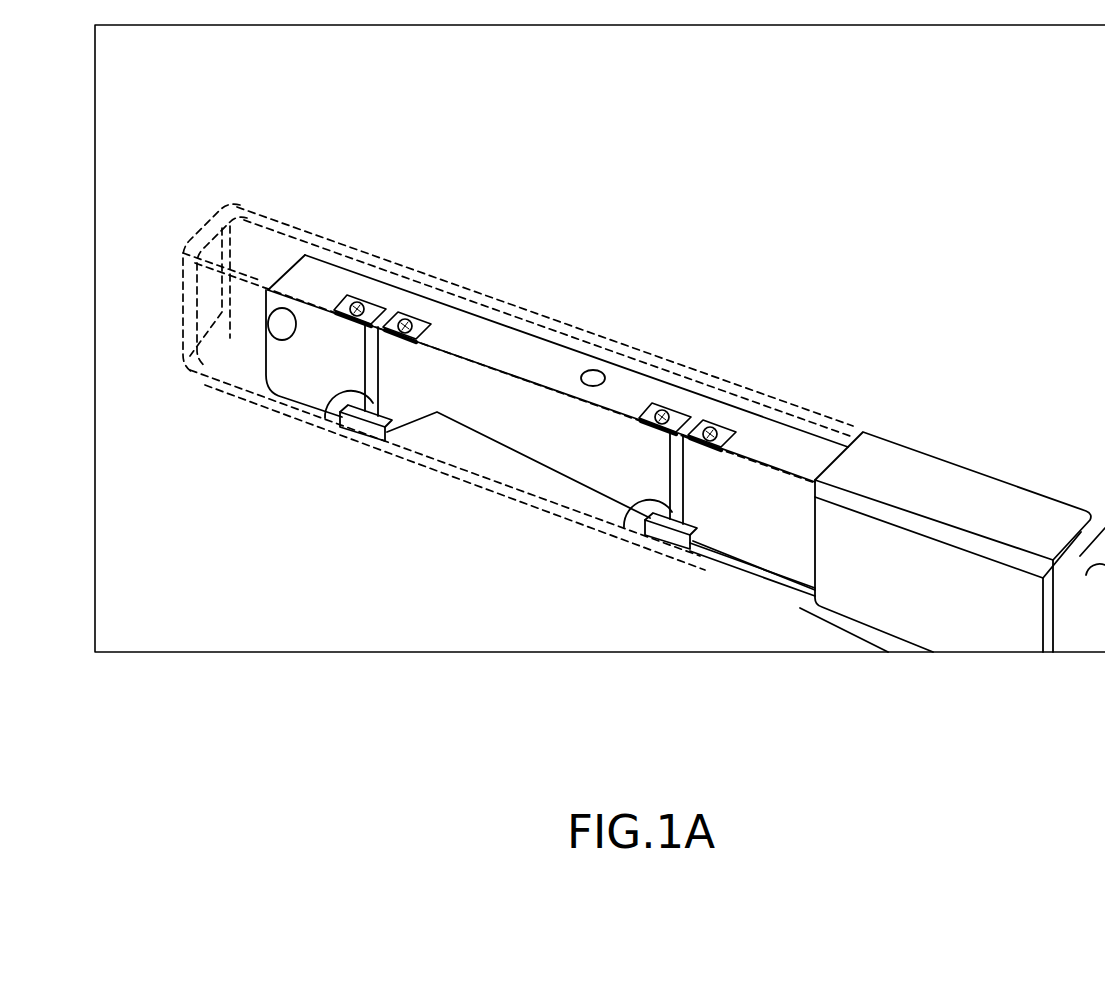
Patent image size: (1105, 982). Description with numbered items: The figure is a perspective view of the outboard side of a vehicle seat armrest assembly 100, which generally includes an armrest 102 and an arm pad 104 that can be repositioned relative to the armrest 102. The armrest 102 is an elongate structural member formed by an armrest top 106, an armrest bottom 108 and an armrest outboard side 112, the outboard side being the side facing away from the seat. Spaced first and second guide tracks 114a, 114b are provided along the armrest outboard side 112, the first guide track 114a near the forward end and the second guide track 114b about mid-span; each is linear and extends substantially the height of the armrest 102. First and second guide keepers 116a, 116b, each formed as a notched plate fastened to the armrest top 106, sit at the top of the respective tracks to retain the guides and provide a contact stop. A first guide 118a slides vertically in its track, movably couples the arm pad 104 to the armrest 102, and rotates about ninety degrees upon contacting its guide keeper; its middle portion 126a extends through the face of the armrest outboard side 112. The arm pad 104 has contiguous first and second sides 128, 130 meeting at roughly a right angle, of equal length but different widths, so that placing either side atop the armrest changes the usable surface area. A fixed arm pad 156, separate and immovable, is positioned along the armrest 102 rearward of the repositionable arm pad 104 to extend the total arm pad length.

The armrest assembly 100 is at (268, 150).
The armrest 102 is at (747, 538).
The arm pad 104 is at (323, 235).
The armrest top 106 is at (523, 354).
The armrest bottom 108 is at (523, 458).
The armrest outboard side 112 is at (612, 483).
The first guide track 114a is at (375, 299).
The second guide track 114b is at (677, 428).
The first guide keeper 116a is at (396, 316).
The second guide keeper 116b is at (703, 431).
The first guide 118a is at (360, 428).
The middle portion 126a is at (326, 417).
The first side 128 is at (257, 252).
The second side 130 is at (222, 362).
The fixed arm pad 156 is at (960, 470).